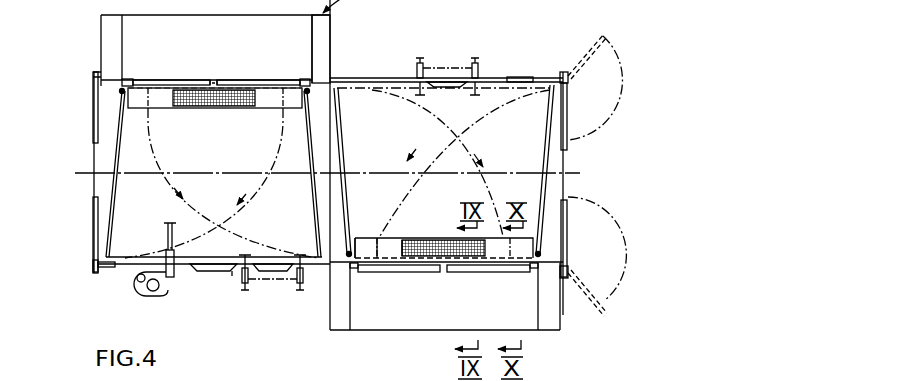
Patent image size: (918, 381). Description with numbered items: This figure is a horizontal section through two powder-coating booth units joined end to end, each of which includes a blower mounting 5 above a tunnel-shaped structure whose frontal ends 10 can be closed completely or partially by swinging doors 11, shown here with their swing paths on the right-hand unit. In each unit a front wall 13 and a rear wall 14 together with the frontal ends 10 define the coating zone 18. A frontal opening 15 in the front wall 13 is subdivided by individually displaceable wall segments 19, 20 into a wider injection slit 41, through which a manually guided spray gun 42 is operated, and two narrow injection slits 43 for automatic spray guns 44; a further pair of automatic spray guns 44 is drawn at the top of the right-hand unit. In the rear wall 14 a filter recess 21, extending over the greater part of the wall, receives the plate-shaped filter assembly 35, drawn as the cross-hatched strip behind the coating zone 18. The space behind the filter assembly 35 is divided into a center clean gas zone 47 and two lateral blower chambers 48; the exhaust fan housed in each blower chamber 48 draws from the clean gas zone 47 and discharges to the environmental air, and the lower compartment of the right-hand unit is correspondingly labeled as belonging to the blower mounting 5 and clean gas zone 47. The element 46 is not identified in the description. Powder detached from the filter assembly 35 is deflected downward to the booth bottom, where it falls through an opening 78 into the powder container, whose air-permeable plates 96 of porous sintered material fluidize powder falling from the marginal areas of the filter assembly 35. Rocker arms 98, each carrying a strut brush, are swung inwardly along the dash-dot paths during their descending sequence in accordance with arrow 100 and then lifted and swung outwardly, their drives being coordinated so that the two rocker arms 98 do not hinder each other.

The blower mounting 5 is at (446, 203).
The frontal end 10 is at (93, 163).
The swinging door 11 is at (96, 121).
The front wall 13 is at (320, 273).
The rear wall 14 is at (110, 78).
The frontal opening 15 is at (120, 269).
The coating zone 18 is at (223, 158).
The wall segment 19 is at (214, 274).
The wall segment 20 is at (277, 272).
The filter recess 21 is at (129, 78).
The filter assembly 35 is at (215, 79).
The injection slit 41 is at (136, 294).
The manually guided spray gun 42 is at (154, 248).
The injection slit 43 is at (238, 271).
The automatic spray gun 44 is at (473, 62).
The partition wall 46 is at (312, 40).
The clean gas zone 47 is at (203, 51).
The blower chamber 48 is at (320, 48).
The opening 78 is at (417, 241).
The air-permeable plate 96 is at (360, 245).
The rocker arm 98 is at (314, 212).
The arrow 100 is at (233, 183).